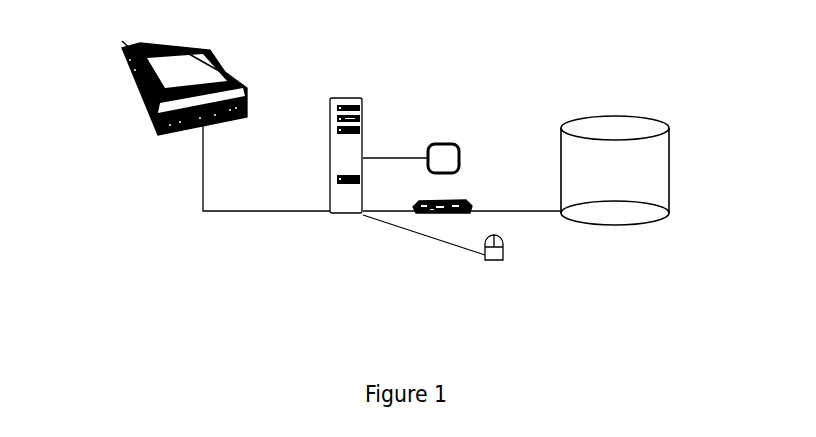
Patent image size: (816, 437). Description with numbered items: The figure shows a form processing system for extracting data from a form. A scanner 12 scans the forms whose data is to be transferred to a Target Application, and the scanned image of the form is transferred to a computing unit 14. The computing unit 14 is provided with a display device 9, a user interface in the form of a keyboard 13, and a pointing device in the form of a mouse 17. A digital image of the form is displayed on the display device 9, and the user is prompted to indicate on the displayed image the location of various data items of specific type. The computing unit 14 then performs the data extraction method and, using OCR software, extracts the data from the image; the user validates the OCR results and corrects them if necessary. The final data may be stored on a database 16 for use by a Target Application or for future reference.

The scanner 12 is at (144, 125).
The computing unit 14 is at (348, 100).
The display device 9 is at (452, 141).
The keyboard 13 is at (463, 200).
The database 16 is at (613, 117).
The mouse 17 is at (495, 260).